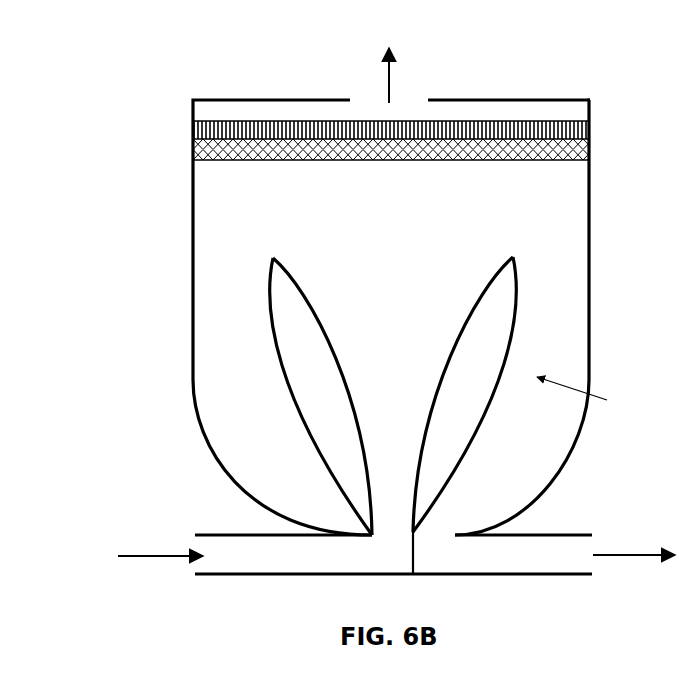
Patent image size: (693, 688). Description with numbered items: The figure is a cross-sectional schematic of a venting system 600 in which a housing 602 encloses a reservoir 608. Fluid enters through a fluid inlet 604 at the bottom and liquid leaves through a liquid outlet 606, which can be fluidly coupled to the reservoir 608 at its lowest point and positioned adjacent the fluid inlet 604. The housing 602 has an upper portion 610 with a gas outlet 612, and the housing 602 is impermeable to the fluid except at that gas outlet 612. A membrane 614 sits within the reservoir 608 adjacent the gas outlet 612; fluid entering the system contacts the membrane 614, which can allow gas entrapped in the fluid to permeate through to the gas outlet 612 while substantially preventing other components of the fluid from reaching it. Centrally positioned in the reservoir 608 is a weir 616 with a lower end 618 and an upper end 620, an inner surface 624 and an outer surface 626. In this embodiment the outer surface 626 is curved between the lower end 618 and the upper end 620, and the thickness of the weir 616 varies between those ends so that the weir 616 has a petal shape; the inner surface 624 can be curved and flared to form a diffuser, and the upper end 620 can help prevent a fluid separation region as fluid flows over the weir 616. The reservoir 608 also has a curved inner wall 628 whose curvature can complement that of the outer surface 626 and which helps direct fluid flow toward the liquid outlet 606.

The venting system 600 is at (181, 68).
The housing 602 is at (191, 300).
The fluid inlet 604 is at (234, 548).
The liquid outlet 606 is at (565, 553).
The reservoir 608 is at (390, 231).
The upper portion 610 is at (457, 100).
The gas outlet 612 is at (371, 101).
The membrane 614 is at (580, 145).
The weir 616 is at (593, 405).
The lower end 618 is at (418, 530).
The upper end 620 is at (515, 257).
The inner surface 624 is at (332, 327).
The outer surface 626 is at (322, 470).
The inner wall 628 is at (242, 488).